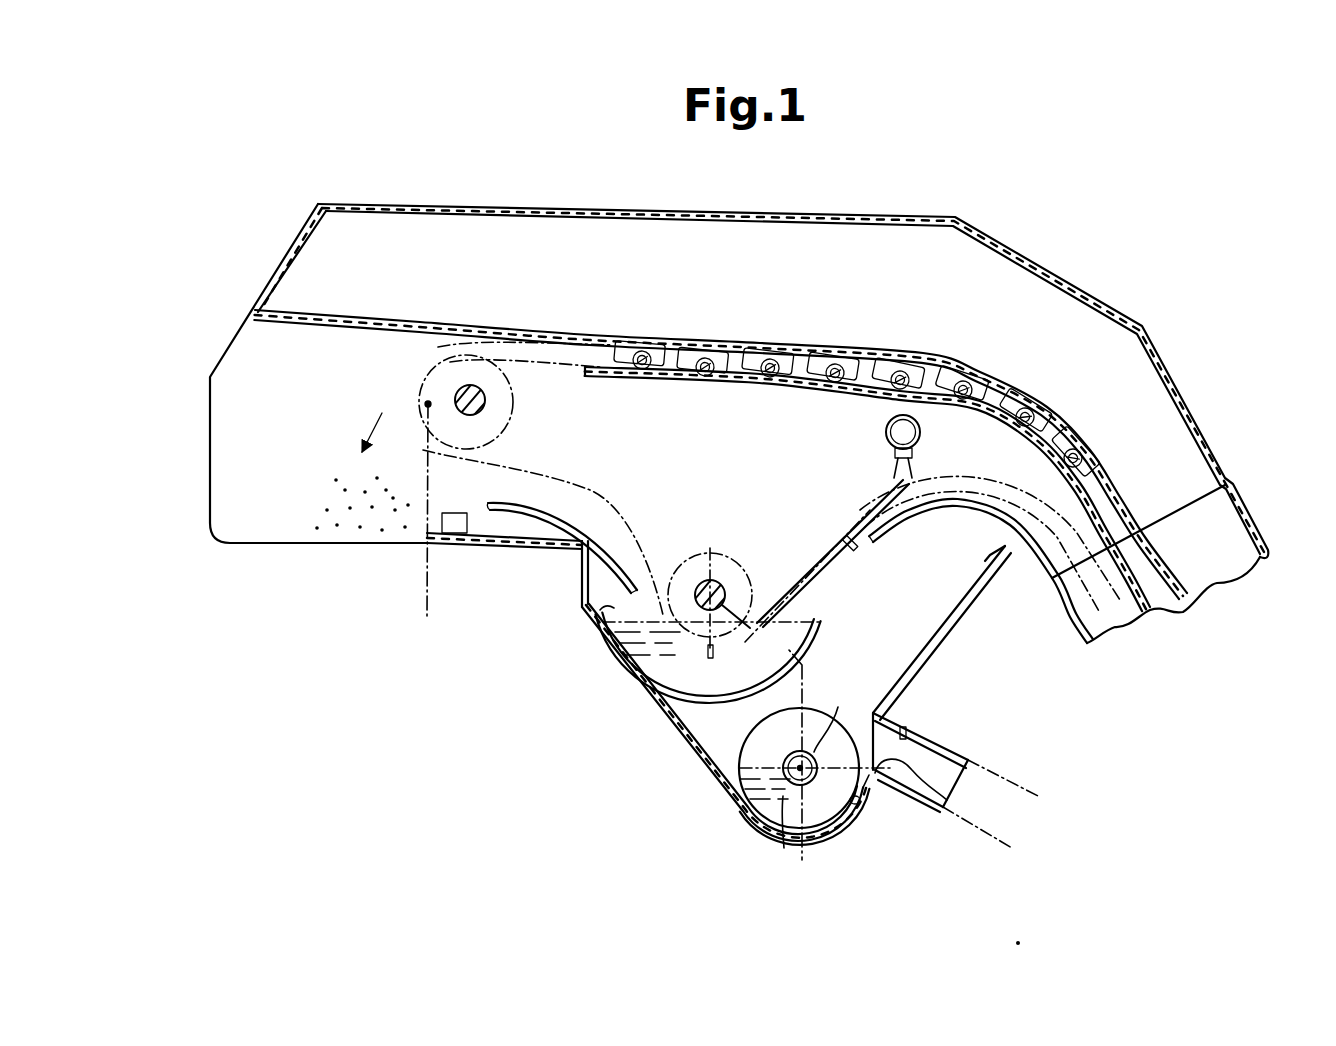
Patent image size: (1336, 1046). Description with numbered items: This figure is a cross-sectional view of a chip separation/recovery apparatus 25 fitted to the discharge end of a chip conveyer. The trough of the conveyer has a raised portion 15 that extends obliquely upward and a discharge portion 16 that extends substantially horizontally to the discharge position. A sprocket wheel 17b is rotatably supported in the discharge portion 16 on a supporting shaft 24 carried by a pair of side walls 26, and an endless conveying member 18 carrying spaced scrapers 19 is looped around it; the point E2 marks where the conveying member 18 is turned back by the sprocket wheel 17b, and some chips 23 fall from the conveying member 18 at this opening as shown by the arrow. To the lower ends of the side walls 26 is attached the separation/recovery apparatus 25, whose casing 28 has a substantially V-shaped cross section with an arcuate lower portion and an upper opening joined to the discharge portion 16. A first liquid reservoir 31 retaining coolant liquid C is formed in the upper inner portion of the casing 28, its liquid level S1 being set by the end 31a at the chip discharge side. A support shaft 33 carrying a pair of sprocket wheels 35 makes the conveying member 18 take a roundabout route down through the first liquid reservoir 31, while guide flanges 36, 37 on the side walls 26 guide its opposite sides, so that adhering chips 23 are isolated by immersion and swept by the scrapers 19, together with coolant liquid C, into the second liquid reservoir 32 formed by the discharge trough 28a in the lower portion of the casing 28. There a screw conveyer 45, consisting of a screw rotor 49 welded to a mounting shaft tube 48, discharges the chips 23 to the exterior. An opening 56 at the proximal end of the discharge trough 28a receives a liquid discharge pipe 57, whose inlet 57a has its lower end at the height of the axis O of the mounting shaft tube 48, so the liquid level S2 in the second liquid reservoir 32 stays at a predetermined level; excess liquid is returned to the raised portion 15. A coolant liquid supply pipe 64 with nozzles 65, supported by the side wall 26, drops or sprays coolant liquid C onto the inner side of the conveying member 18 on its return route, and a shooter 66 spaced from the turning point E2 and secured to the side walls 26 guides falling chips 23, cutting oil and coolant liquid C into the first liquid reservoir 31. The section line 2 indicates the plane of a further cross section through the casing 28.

The section line 2- 2 is at (718, 208).
The raised portion 15 is at (1248, 515).
The discharge portion 16 is at (1003, 240).
The sprocket wheel 17b is at (440, 349).
The conveying member 18 is at (806, 362).
The scrapers 19 is at (745, 356).
The chips 23 is at (330, 503).
The supporting shaft 24 is at (486, 403).
The separation/recovery apparatus 25 is at (663, 806).
The side walls 26 is at (240, 340).
The casing 28 is at (945, 660).
The discharge trough 28a is at (852, 830).
The first liquid reservoir 31 is at (672, 700).
The end of the first liquid reservoir 31a is at (823, 622).
The second liquid reservoir 32 is at (862, 802).
The support shaft 33 is at (703, 578).
The sprocket wheels 35 is at (752, 566).
The guide flange 36 is at (585, 508).
The guide flange 37 is at (942, 517).
The screw conveyer 45 is at (757, 822).
The mounting shaft tube 48 is at (820, 730).
The screw rotor 49 is at (765, 730).
The opening 56 is at (918, 735).
The liquid discharge pipe 57 is at (975, 750).
The inlet 57a is at (950, 795).
The coolant liquid supply pipe 64 is at (920, 437).
The nozzles 65 is at (890, 452).
The shooter 66 is at (510, 548).
The coolant liquid C is at (895, 472).
The turning point E2 is at (426, 404).
The axis of the mounting shaft tube O is at (784, 761).
The liquid level S1 is at (592, 620).
The liquid level S2 is at (730, 768).